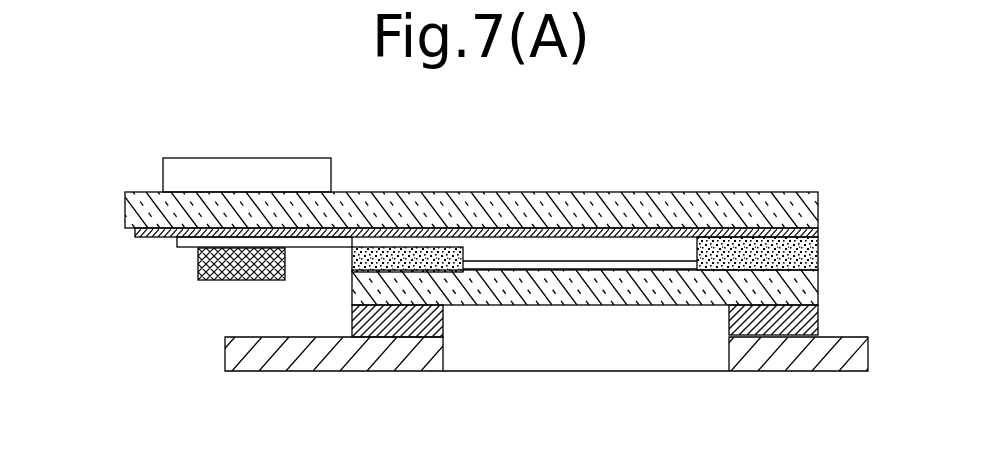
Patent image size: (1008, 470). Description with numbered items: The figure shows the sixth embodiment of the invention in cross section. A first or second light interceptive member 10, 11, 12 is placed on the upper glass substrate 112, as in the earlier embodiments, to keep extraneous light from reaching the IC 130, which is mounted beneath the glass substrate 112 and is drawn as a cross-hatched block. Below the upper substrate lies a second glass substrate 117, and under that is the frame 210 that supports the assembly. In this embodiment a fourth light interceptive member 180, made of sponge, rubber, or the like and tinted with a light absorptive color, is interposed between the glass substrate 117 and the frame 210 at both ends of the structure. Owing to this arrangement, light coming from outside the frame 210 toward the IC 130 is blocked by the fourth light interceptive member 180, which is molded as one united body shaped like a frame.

The first light interceptive member 10 is at (184, 172).
The first light interceptive member 11 is at (184, 172).
The second light interceptive member 12 is at (163, 174).
The glass substrate 112 is at (798, 213).
The glass substrate 117 is at (802, 285).
The IC 130 is at (215, 281).
The fourth light interceptive member 180 is at (352, 321).
The frame 210 is at (393, 372).